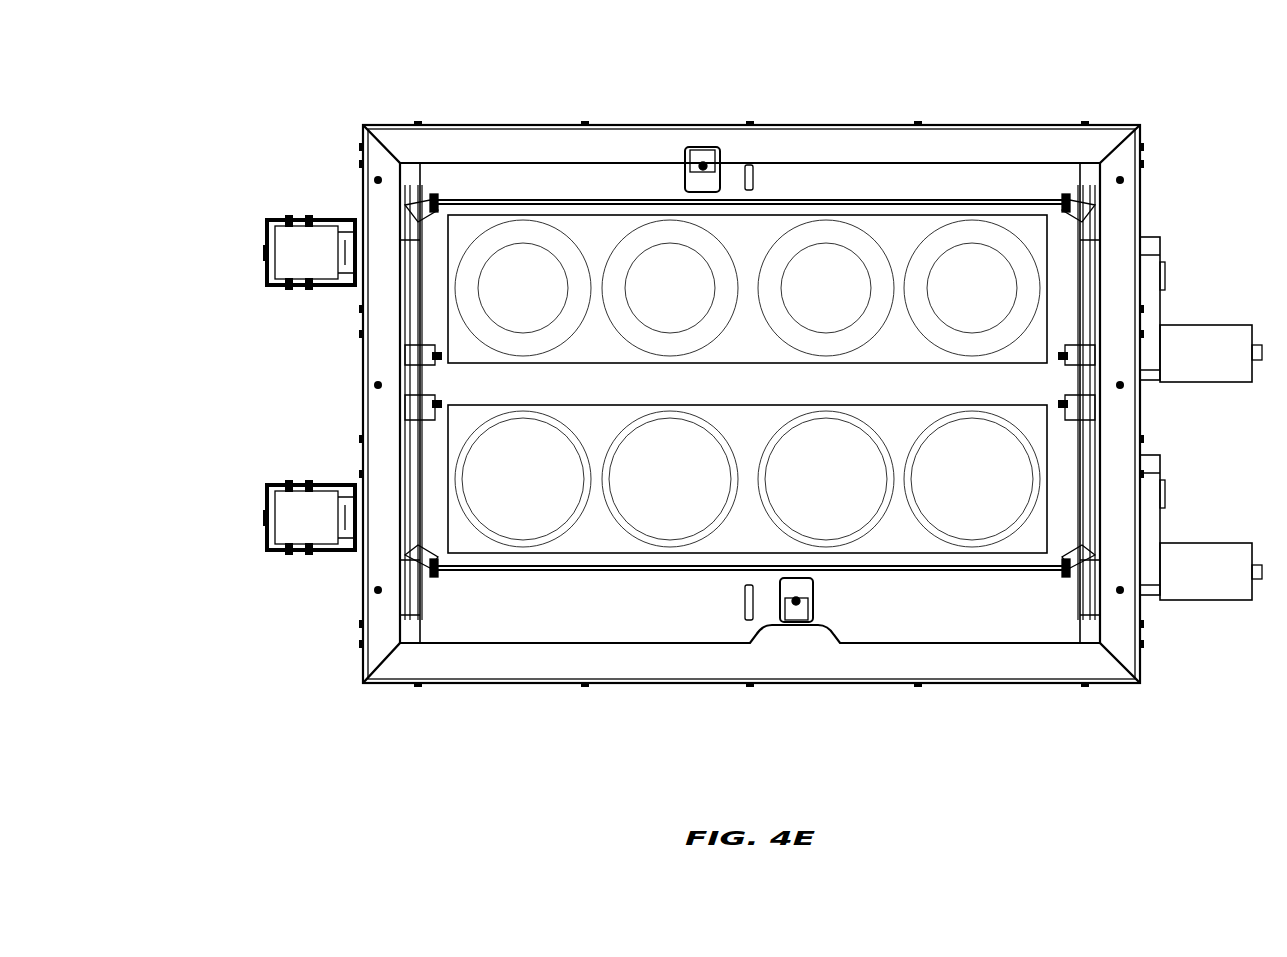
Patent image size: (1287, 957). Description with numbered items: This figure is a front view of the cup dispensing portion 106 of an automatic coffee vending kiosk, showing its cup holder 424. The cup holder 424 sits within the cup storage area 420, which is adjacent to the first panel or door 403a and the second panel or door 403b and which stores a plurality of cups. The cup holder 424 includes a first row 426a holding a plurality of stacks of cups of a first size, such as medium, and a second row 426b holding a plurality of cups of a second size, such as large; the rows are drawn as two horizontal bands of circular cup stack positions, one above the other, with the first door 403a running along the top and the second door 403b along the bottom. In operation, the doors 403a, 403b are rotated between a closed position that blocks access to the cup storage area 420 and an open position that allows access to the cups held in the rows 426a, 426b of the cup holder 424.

The cup dispensing portion 106 is at (318, 108).
The cup holder 424 is at (598, 222).
The first panel or door 403a is at (932, 203).
The second panel or door 403b is at (914, 567).
The first row 426a is at (745, 344).
The second row 426b is at (893, 413).
The cup storage area 420 is at (438, 381).